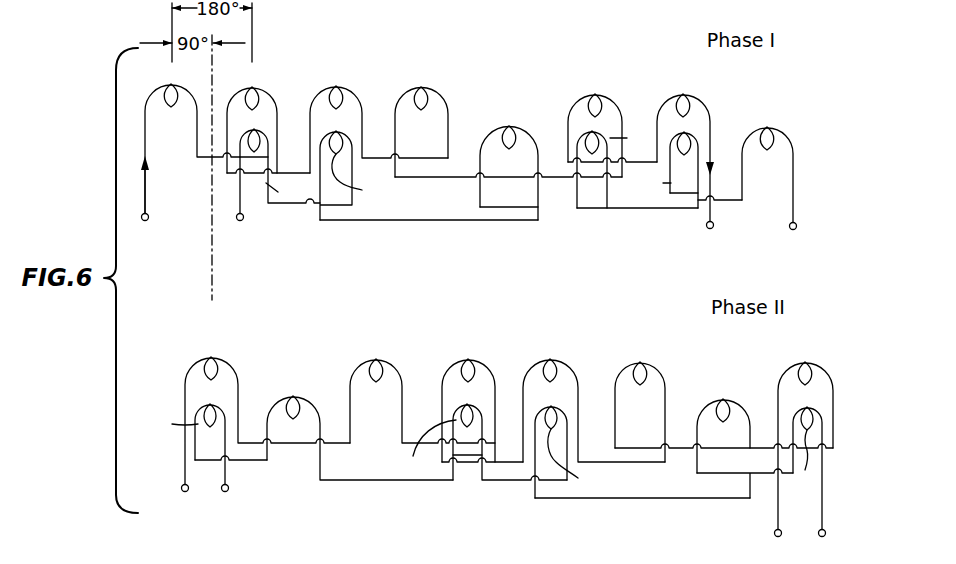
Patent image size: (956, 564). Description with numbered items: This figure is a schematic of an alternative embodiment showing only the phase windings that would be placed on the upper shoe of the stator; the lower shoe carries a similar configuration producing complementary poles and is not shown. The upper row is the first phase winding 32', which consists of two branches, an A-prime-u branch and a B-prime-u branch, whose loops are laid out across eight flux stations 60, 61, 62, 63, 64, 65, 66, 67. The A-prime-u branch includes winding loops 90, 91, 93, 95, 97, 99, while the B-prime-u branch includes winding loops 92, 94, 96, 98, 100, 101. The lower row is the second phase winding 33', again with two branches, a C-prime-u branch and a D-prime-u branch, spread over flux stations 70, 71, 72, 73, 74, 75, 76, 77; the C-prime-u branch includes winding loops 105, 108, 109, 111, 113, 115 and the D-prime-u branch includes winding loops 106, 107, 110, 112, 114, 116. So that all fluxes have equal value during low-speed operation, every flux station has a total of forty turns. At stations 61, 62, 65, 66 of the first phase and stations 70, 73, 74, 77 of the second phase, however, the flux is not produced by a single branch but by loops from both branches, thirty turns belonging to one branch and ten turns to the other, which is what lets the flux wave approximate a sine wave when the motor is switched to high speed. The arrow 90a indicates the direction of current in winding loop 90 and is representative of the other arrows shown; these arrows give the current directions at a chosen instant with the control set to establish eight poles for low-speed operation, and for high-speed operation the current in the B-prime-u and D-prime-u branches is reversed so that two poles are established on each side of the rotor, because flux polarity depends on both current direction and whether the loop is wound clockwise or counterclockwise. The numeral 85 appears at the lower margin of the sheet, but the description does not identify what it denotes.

The first phase winding 32' is at (448, 167).
The second phase winding 33' is at (485, 440).
The flux station 60 is at (146, 176).
The flux station 61 is at (273, 167).
The flux station 62 is at (424, 168).
The flux station 63 is at (508, 168).
The flux station 64 is at (508, 183).
The flux station 65 is at (612, 175).
The flux station 66 is at (696, 176).
The flux station 67 is at (793, 197).
The flux station 70 is at (236, 419).
The flux station 71 is at (360, 398).
The flux station 72 is at (422, 380).
The flux station 73 is at (479, 398).
The flux station 74 is at (620, 407).
The flux station 75 is at (724, 389).
The flux station 76 is at (745, 423).
The flux station 77 is at (794, 440).
The winding diagram 85 is at (340, 554).
The winding loop 90 is at (171, 107).
The arrow 90a is at (145, 162).
The winding loop 91 is at (272, 86).
The winding loop 92 is at (259, 130).
The winding loop 93 is at (356, 84).
The winding loop 94 is at (353, 134).
The winding loop 95 is at (446, 95).
The winding loop 96 is at (481, 126).
The winding loop 97 is at (575, 105).
The winding loop 98 is at (600, 132).
The winding loop 99 is at (703, 96).
The winding loop 100 is at (700, 130).
The winding loop 101 is at (796, 137).
The winding loop 105 is at (216, 380).
The winding loop 106 is at (195, 407).
The winding loop 107 is at (293, 419).
The winding loop 108 is at (376, 382).
The winding loop 109 is at (456, 372).
The winding loop 110 is at (455, 408).
The winding loop 111 is at (538, 372).
The winding loop 112 is at (566, 410).
The winding loop 113 is at (640, 385).
The winding loop 114 is at (723, 422).
The winding loop 115 is at (796, 378).
The winding loop 116 is at (795, 412).